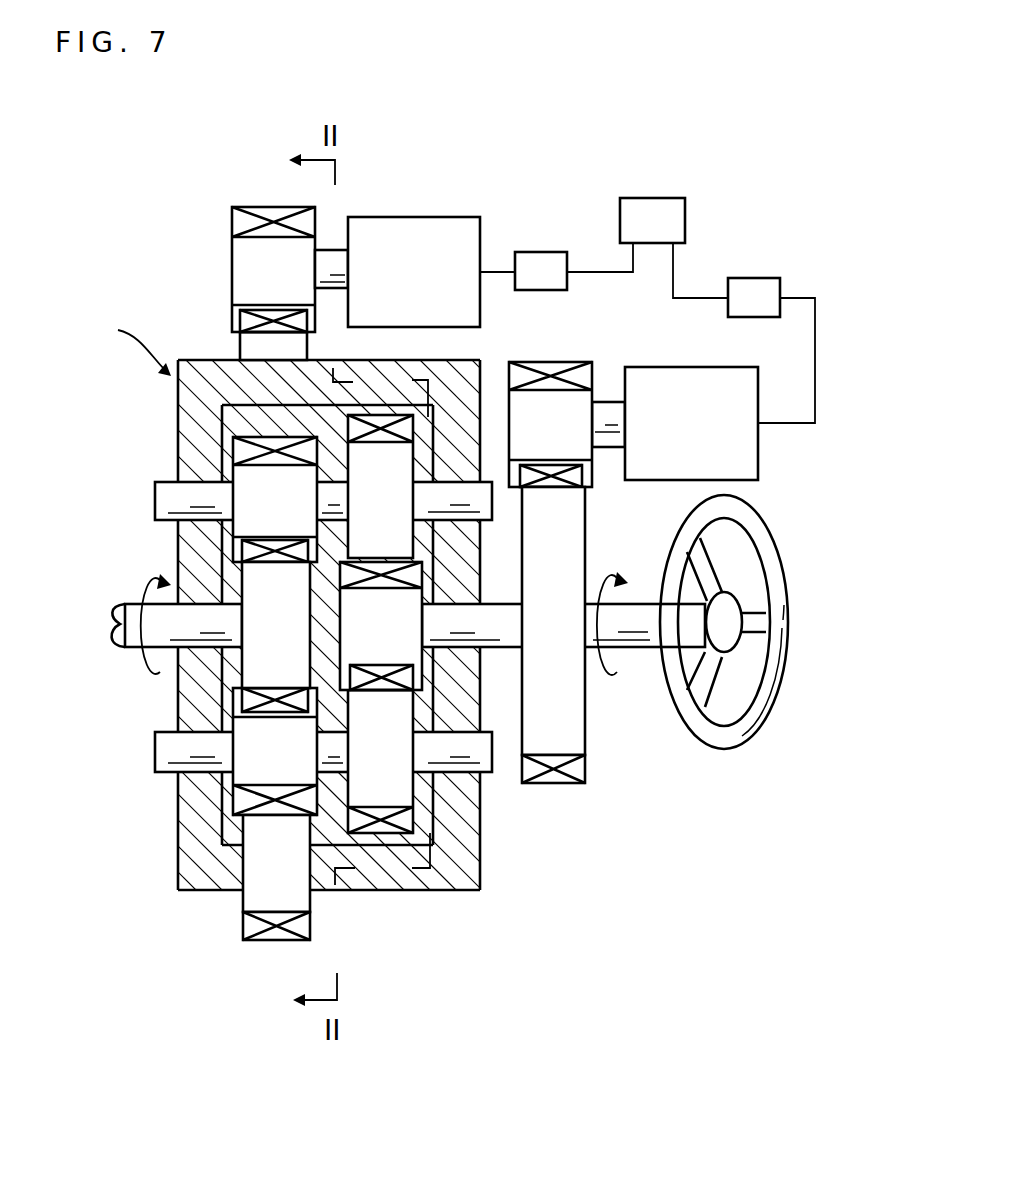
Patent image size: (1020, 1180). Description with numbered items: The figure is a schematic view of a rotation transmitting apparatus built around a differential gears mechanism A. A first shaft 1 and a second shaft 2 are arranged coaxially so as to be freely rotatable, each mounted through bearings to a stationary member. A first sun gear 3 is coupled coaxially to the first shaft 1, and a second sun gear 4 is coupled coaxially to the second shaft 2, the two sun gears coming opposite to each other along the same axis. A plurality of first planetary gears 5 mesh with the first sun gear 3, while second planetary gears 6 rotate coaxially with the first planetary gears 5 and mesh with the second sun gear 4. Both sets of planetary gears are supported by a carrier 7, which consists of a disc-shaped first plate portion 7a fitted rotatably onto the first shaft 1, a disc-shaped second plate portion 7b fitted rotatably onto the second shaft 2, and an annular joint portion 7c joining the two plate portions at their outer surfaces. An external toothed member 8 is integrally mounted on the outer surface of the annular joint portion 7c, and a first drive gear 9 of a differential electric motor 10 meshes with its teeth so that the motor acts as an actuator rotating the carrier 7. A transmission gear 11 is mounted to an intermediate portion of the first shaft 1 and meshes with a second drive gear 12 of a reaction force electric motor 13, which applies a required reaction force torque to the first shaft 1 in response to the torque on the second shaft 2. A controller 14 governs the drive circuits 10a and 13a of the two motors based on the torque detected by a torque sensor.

The first shaft 1 is at (637, 648).
The second shaft 2 is at (130, 604).
The first sun gear 3 is at (420, 652).
The second sun gear 4 is at (242, 660).
The first planetary gears 5 is at (412, 430).
The second planetary gears 6 is at (233, 450).
The carrier 7 is at (485, 854).
The first plate portion 7a is at (480, 822).
The second plate portion 7b is at (178, 832).
The annular joint portion 7c is at (428, 890).
The external toothed member 8 is at (275, 942).
The first drive gear 9 is at (232, 222).
The differential electric motor 10 is at (413, 217).
The drive circuit 10a is at (539, 252).
The transmission gear 11 is at (585, 515).
The second drive gear 12 is at (550, 362).
The reaction force electric motor 13 is at (758, 453).
The drive circuit 13a is at (752, 278).
The controller 14 is at (655, 198).
The differential gears mechanism A is at (130, 345).